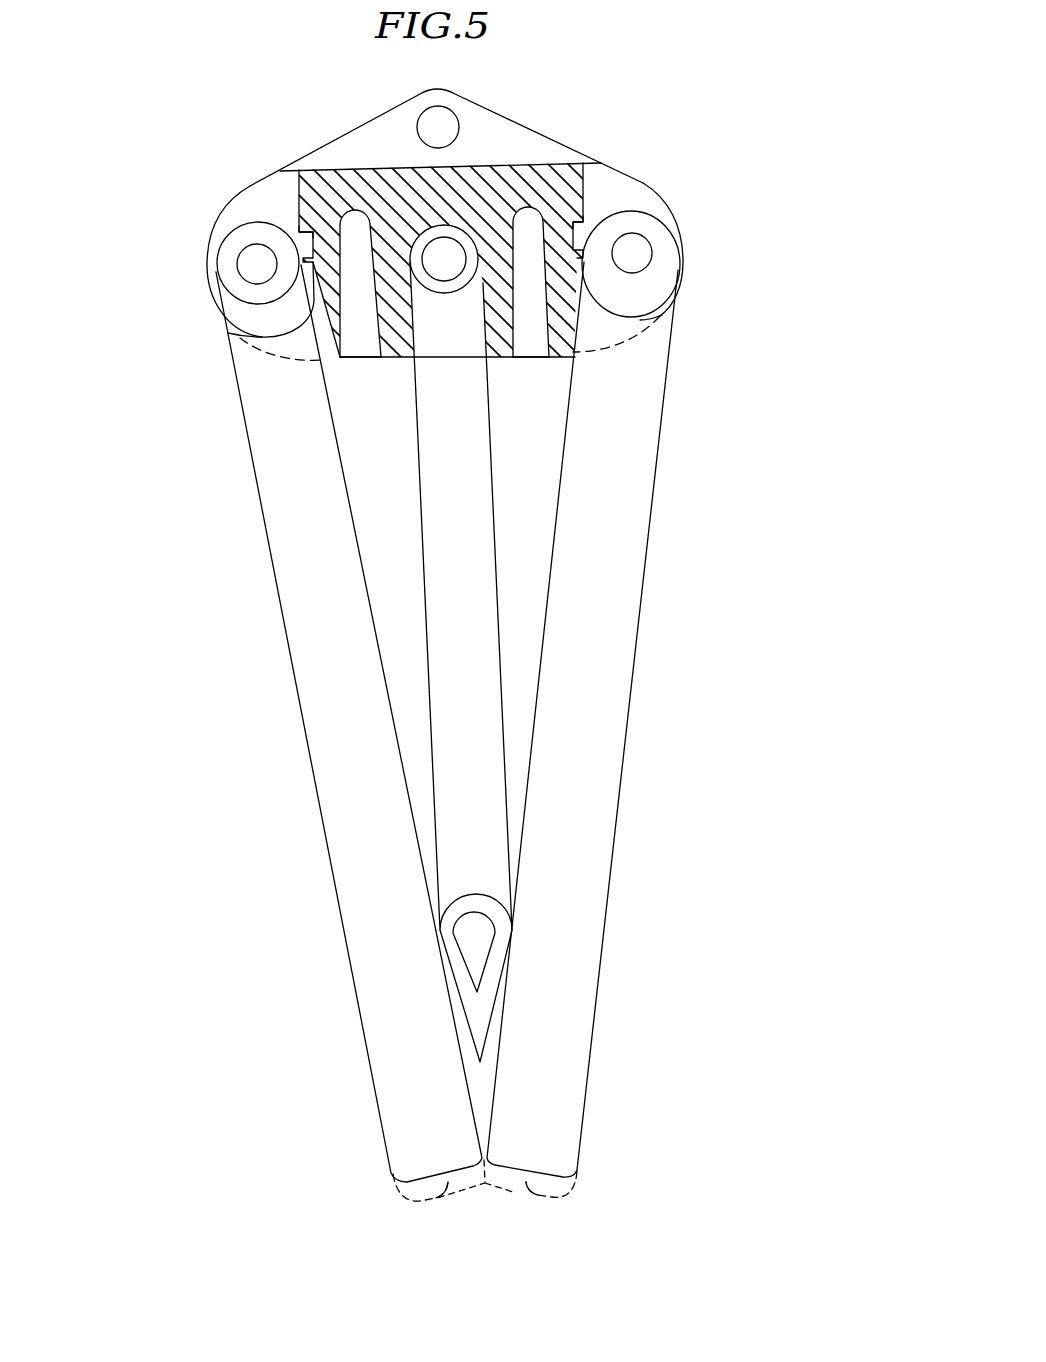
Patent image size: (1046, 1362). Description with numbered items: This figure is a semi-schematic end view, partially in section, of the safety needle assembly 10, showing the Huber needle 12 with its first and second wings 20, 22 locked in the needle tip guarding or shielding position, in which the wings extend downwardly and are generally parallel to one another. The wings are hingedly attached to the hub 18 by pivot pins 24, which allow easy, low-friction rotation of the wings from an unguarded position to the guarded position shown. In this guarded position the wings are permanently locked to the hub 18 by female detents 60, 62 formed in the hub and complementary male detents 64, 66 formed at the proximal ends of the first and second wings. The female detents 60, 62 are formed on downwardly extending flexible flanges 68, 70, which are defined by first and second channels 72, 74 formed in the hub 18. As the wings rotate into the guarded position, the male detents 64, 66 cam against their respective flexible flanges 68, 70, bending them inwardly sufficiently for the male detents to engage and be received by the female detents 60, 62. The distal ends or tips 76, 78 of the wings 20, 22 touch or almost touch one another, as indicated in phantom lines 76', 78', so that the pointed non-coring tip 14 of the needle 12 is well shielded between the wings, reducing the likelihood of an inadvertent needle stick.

The safety needle assembly 10 is at (200, 572).
The Huber needle 12 is at (522, 566).
The non-coring tip 14 is at (493, 1013).
The hub 18 is at (542, 176).
The first wing 20 is at (307, 747).
The second wing 22 is at (626, 733).
The pivot pin 24 is at (258, 262).
The first female detent 60 is at (298, 238).
The second female detent 62 is at (583, 233).
The first male detent 64 is at (250, 337).
The second male detent 66 is at (652, 319).
The first flexible flange 68 is at (355, 357).
The second flexible flange 70 is at (547, 355).
The first channel 72 is at (363, 373).
The second channel 74 is at (533, 370).
The distal end of first wing 76 is at (379, 1201).
The distal end of second wing 78 is at (594, 1194).
The distal end of first wing in phantom 76' is at (404, 1228).
The distal end of second wing in phantom 78' is at (567, 1224).